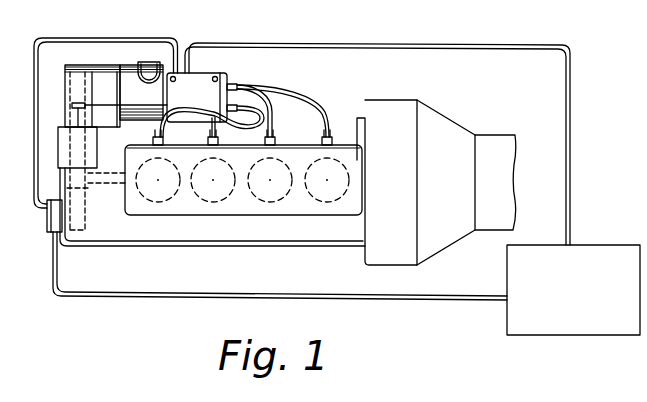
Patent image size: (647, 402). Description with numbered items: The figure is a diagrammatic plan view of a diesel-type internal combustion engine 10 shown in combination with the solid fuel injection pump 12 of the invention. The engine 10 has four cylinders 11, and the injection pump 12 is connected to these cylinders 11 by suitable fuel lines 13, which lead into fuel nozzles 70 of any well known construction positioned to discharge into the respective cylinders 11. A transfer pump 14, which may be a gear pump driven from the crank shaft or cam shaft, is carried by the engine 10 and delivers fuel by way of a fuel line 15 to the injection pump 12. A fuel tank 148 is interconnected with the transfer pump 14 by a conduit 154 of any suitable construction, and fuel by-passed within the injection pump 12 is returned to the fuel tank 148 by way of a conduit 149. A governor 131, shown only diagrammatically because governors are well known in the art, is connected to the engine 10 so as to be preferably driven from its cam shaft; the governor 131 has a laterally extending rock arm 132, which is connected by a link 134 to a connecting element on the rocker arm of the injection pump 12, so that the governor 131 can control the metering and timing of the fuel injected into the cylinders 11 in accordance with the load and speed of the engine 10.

The internal combustion engine 10 is at (384, 93).
The cylinders 11 is at (207, 202).
The fuel injection pump 12 is at (208, 62).
The fuel lines 13 is at (282, 108).
The transfer pump 14 is at (50, 232).
The fuel line 15 is at (100, 38).
The fuel nozzles 70 is at (154, 139).
The governor 131 is at (90, 143).
The rock arm 132 is at (73, 109).
The link 134 is at (160, 104).
The fuel tank 148 is at (573, 290).
The conduit 149 is at (568, 109).
The conduit 154 is at (381, 296).